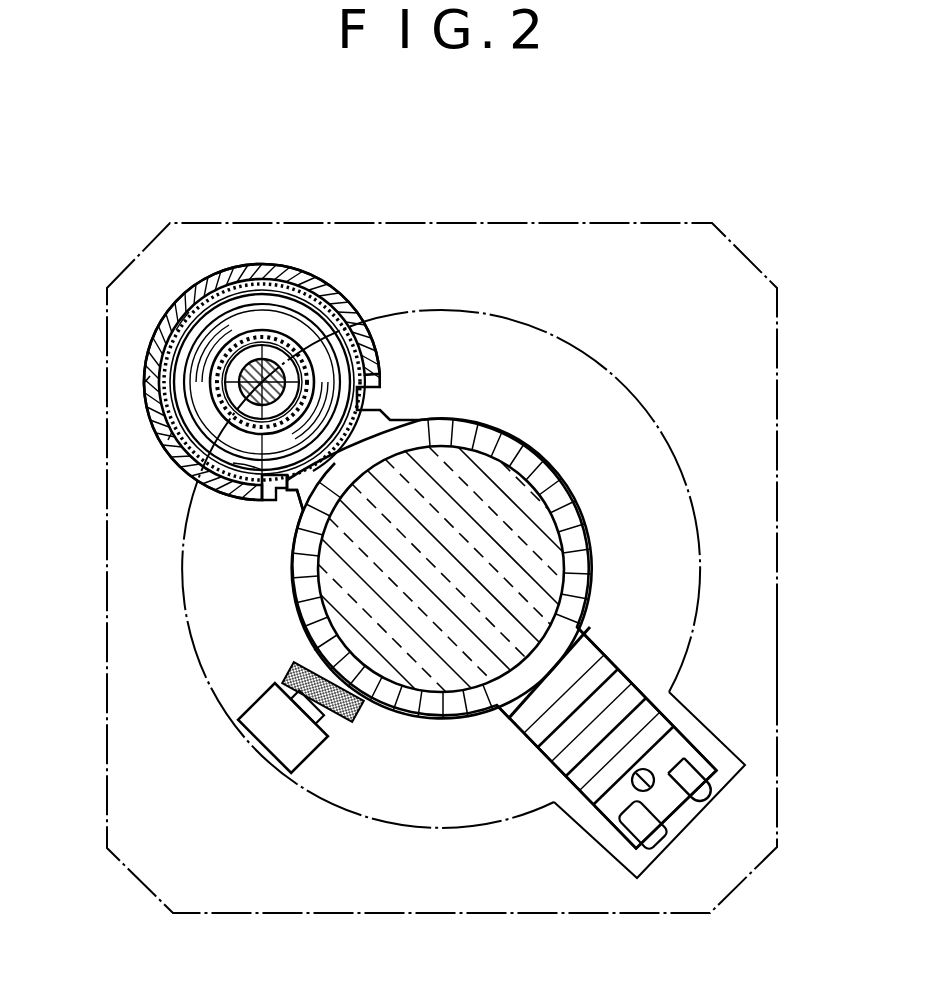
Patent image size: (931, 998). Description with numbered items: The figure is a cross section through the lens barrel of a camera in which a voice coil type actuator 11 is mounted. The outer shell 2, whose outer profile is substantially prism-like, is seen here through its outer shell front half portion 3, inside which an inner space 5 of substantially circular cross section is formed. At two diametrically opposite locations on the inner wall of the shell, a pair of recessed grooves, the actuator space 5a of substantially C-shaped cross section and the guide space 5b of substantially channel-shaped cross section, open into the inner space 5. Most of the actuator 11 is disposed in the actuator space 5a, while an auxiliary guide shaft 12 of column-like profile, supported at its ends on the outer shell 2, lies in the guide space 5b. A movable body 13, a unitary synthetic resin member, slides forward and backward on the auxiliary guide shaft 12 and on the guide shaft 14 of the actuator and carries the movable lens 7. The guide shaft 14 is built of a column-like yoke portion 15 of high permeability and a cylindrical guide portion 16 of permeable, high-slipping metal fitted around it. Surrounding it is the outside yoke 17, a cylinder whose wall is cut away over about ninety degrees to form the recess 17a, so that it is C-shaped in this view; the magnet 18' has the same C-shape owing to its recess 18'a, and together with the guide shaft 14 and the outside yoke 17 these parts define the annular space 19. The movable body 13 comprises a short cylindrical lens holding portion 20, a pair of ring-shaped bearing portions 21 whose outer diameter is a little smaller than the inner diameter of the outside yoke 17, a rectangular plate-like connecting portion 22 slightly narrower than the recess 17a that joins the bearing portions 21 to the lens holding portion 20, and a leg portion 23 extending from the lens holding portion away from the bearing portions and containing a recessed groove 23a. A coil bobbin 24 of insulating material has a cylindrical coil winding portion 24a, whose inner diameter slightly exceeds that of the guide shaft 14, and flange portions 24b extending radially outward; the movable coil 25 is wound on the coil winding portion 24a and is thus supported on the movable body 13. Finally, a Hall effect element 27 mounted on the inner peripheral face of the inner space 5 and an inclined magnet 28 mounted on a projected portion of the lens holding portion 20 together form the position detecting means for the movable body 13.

The outer shell 2 is at (778, 530).
The outer shell front half portion 3 is at (779, 669).
The inner space 5 is at (664, 570).
The actuator space 5a is at (256, 264).
The guide space 5b is at (686, 843).
The movable lens 7 is at (543, 553).
The voice coil type actuator 11 is at (567, 443).
The auxiliary guide shaft 12 is at (640, 792).
The movable body 13 is at (507, 433).
The guide shaft 14 is at (431, 190).
The yoke portion 15 is at (296, 345).
The guide portion 16 is at (318, 350).
The outside yoke 17 is at (318, 290).
The recess 17a is at (300, 383).
The magnet 18' is at (192, 487).
The recess 18'a is at (256, 523).
The space 19 is at (150, 376).
The bearing portion 21 is at (172, 432).
The lens holding portion 20 is at (302, 580).
The connecting portion 22 is at (382, 418).
The leg portion 23 is at (603, 683).
The recessed groove 23a is at (690, 790).
The coil bobbin 24 is at (220, 325).
The coil winding portion 24a is at (238, 352).
The flange portion 24b is at (168, 348).
The movable coil 25 is at (318, 360).
The Hall effect element 27 is at (360, 717).
The inclined magnet 28 is at (293, 690).